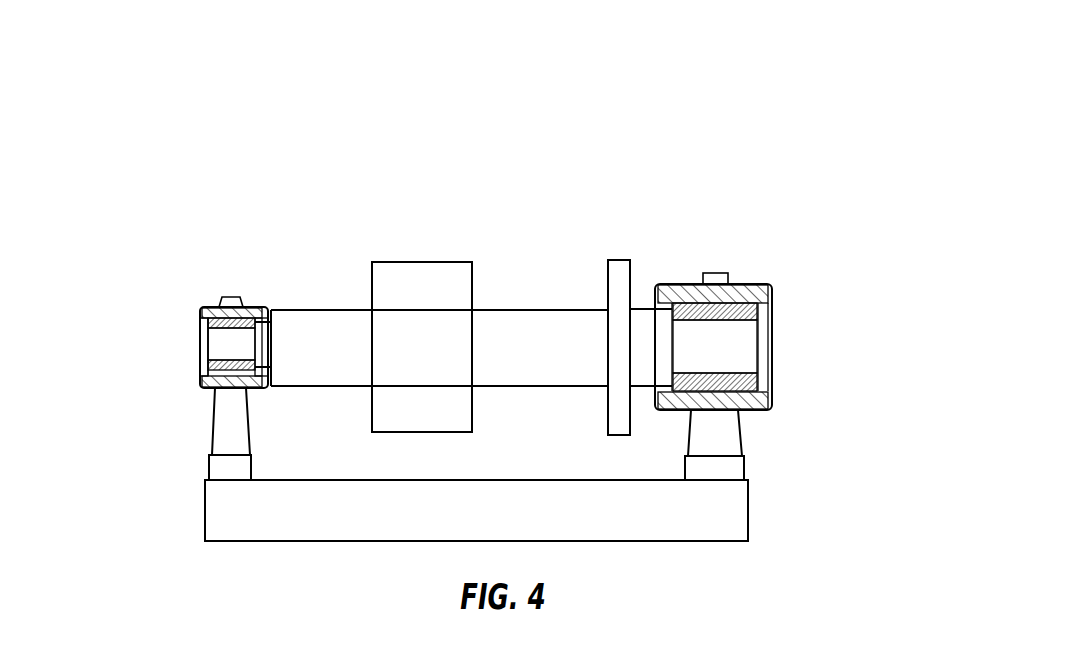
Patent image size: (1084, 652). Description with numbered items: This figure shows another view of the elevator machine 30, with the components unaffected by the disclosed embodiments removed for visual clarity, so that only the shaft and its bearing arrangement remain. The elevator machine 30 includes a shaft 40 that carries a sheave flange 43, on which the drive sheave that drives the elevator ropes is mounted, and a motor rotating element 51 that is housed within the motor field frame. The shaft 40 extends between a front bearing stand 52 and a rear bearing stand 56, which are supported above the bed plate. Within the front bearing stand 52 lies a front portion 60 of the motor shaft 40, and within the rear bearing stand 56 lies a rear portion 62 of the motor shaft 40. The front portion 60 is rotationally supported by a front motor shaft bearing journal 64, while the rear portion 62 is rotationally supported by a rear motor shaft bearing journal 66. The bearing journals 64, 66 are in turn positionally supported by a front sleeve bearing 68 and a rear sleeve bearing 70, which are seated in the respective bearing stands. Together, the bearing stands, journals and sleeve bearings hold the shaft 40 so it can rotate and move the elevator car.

The elevator machine 30 is at (888, 62).
The shaft 40 is at (560, 310).
The sheave flange 43 is at (627, 260).
The motor rotating element 51 is at (407, 262).
The front bearing stand 52 is at (257, 307).
The rear bearing stand 56 is at (727, 277).
The front portion of the motor shaft 60 is at (202, 343).
The rear portion of the motor shaft 62 is at (757, 343).
The front motor shaft bearing journal 64 is at (232, 342).
The rear motor shaft bearing journal 66 is at (758, 285).
The front sleeve bearing 68 is at (207, 307).
The rear sleeve bearing 70 is at (752, 387).